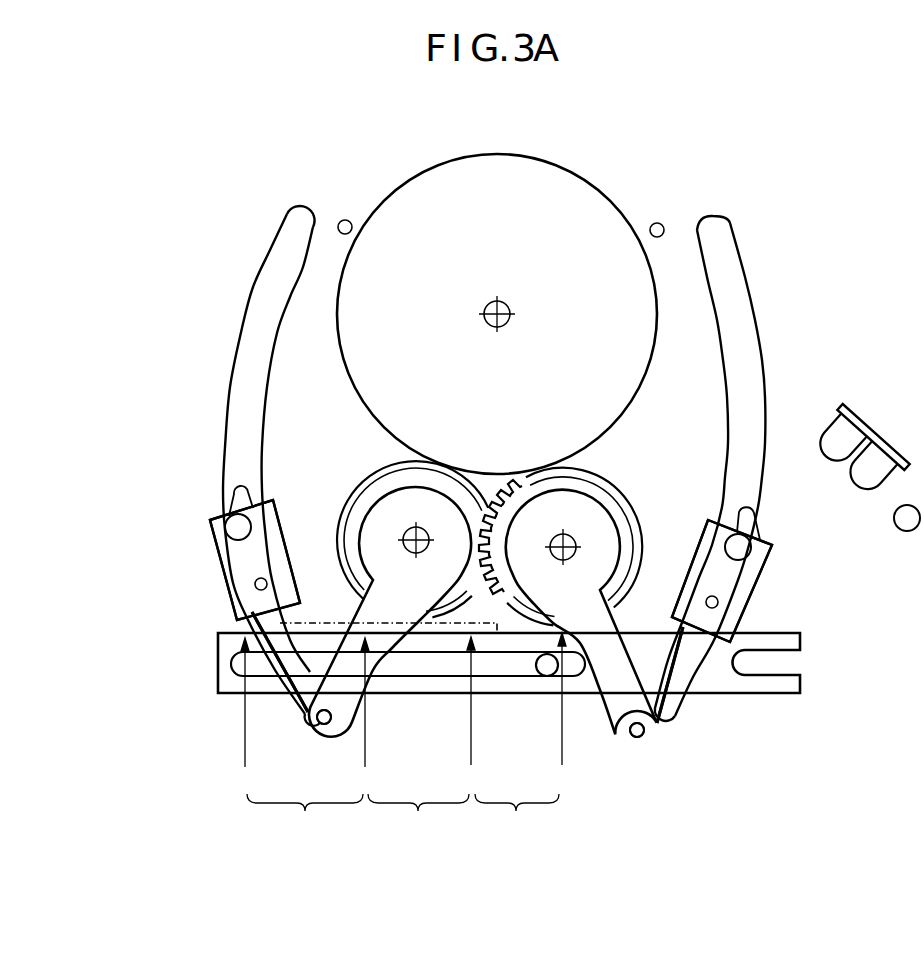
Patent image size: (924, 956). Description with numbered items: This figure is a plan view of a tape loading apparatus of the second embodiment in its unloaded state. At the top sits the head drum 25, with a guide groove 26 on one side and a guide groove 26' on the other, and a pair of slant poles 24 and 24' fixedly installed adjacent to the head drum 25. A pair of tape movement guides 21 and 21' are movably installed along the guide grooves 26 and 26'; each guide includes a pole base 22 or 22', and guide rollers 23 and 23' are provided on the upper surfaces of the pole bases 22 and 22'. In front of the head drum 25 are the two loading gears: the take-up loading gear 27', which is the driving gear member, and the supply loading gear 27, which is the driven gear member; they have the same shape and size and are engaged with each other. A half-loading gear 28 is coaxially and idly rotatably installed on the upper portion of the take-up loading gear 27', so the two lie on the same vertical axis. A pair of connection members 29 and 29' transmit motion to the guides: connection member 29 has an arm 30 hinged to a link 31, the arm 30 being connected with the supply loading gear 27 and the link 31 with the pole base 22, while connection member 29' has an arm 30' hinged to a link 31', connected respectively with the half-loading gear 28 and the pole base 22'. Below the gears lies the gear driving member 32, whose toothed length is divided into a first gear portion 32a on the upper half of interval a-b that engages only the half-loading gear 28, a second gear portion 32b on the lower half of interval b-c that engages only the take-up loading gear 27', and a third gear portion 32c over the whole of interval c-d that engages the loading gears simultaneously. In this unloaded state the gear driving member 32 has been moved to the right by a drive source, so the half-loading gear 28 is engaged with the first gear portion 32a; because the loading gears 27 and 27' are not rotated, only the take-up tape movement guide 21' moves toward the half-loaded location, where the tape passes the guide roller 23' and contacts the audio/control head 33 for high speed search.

The tape movement guide 21 is at (206, 560).
The take-up tape movement guide 21' is at (769, 581).
The pole base 22 is at (222, 566).
The pole base 22' is at (759, 575).
The guide roller 23 is at (195, 500).
The guide roller 23' is at (721, 507).
The slant pole 24 is at (351, 173).
The slant pole 24' is at (680, 190).
The head drum 25 is at (592, 192).
The guide groove 26 is at (236, 466).
The guide groove 26' is at (756, 468).
The supply loading gear 27 is at (398, 573).
The take-up loading gear 27' is at (582, 574).
The half-loading gear 28 is at (590, 504).
The connection member 29 is at (224, 690).
The connection member 29' is at (706, 698).
The arm 30 is at (251, 742).
The arm 30' is at (681, 755).
The link 31 is at (240, 673).
The link 31' is at (696, 683).
The gear driving member 32 is at (541, 698).
The first gear portion 32a is at (522, 742).
The second gear portion 32b is at (424, 744).
The third gear portion 32c is at (306, 745).
The audio/control head 33 is at (856, 428).